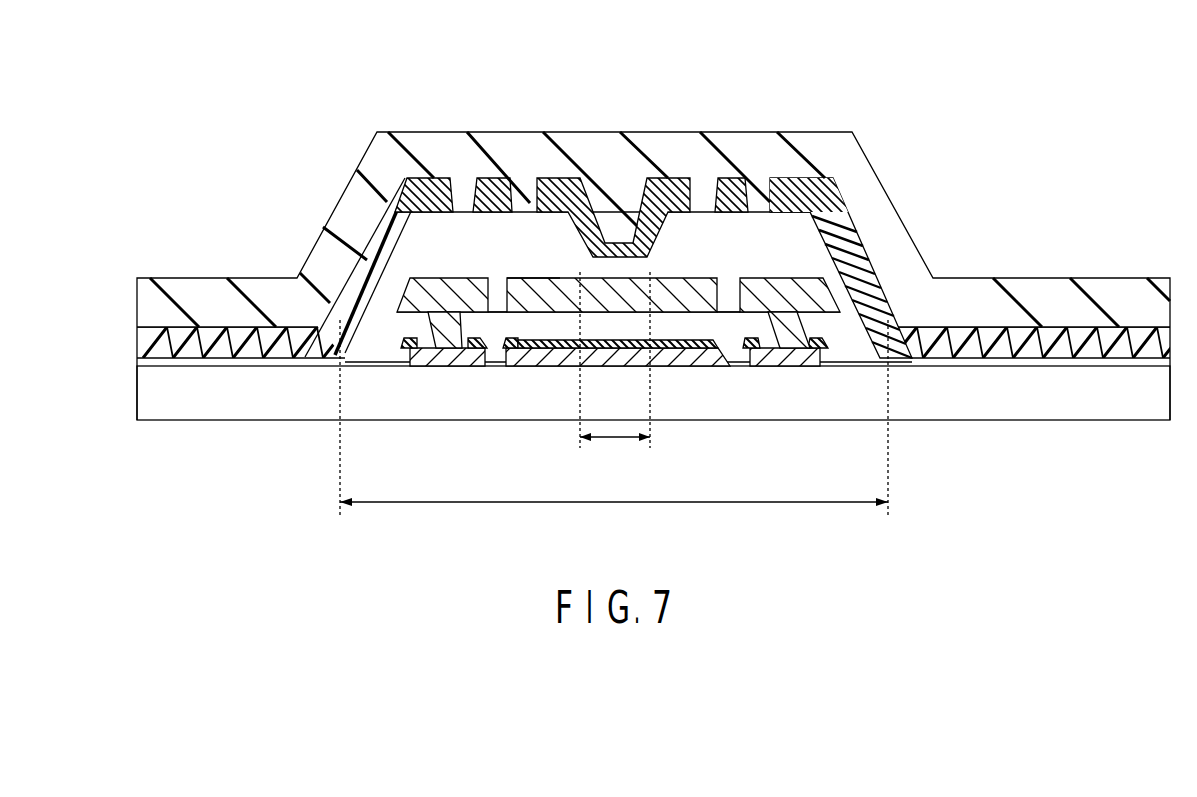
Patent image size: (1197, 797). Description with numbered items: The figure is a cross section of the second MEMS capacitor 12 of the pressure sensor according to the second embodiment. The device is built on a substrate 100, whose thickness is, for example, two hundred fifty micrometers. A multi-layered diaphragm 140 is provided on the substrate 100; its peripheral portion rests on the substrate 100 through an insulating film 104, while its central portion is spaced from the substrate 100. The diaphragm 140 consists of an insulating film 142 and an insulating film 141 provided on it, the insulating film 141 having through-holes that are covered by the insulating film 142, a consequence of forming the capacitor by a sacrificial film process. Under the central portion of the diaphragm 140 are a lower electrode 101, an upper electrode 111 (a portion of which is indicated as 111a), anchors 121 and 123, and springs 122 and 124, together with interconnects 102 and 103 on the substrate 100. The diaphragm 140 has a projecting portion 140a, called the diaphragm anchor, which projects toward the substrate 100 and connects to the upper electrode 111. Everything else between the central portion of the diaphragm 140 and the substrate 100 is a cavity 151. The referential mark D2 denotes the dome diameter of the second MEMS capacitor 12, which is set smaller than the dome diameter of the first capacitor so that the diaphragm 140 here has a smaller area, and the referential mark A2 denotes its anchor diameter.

The second MEMS capacitor 12 is at (756, 79).
The substrate 100 is at (1107, 410).
The lower electrode 101 is at (553, 368).
The interconnect 102 is at (447, 368).
The interconnect 103 is at (797, 369).
The insulating film 104 is at (663, 340).
The upper electrode 111 is at (698, 284).
The channel region of semiconductor layer 111a is at (537, 280).
The anchor 121 is at (457, 287).
The spring 122 is at (496, 292).
The anchor 123 is at (791, 282).
The spring 124 is at (730, 292).
The diaphragm 140 is at (271, 172).
The projecting portion 140a is at (660, 246).
The insulating film 141 is at (591, 225).
The insulating film 142 is at (365, 184).
The cavity 151 is at (789, 215).
The anchor diameter A2 is at (615, 373).
The dome diameter D2 is at (614, 426).